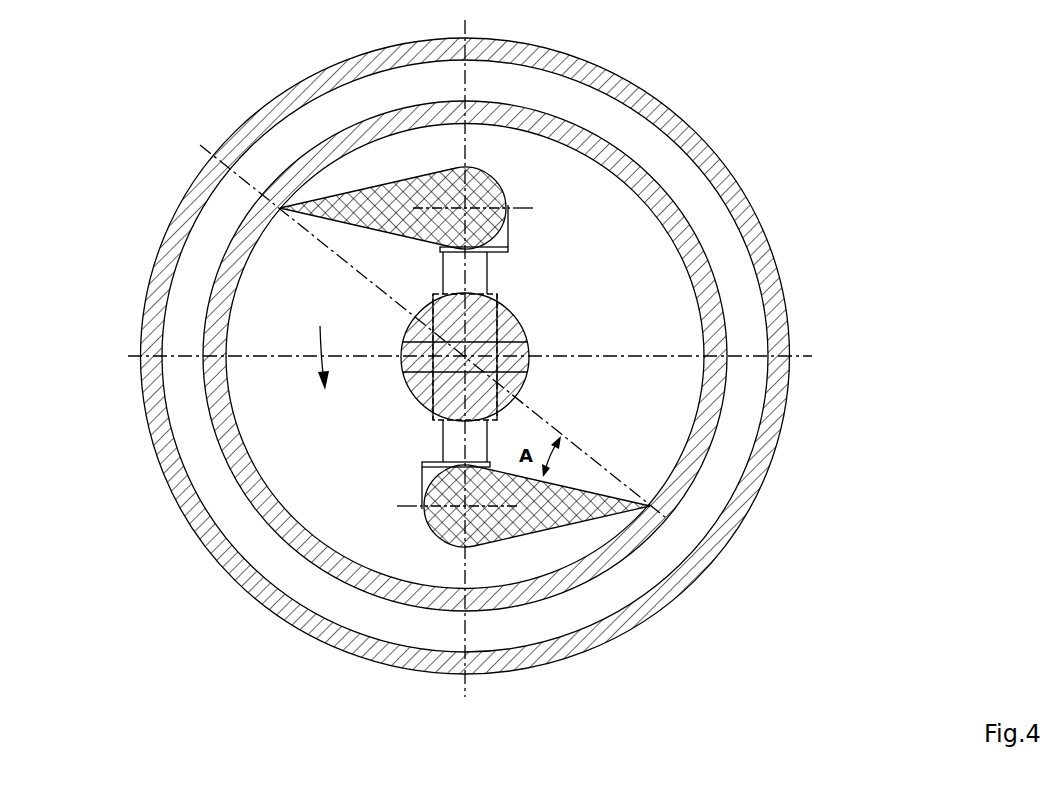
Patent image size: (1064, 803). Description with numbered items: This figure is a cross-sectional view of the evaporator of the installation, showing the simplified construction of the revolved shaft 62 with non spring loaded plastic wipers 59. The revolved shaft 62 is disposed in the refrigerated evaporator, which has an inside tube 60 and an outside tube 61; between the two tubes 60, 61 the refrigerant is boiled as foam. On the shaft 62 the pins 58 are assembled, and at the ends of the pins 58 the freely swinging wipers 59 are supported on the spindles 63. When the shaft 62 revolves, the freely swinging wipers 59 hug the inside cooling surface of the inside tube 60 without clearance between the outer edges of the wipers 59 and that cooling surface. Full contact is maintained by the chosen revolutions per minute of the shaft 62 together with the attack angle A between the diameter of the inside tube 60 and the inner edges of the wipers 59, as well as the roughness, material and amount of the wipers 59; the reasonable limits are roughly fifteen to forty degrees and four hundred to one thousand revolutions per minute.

The pins 58 is at (475, 334).
The wipers 59 is at (358, 193).
The inside tube 60 is at (573, 130).
The outside tube 61 is at (705, 145).
The revolved shaft 62 is at (500, 374).
The spindles 63 is at (435, 535).